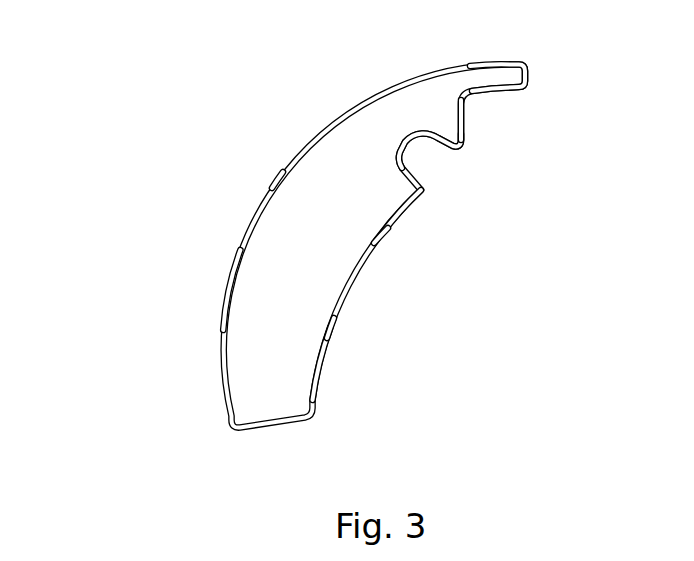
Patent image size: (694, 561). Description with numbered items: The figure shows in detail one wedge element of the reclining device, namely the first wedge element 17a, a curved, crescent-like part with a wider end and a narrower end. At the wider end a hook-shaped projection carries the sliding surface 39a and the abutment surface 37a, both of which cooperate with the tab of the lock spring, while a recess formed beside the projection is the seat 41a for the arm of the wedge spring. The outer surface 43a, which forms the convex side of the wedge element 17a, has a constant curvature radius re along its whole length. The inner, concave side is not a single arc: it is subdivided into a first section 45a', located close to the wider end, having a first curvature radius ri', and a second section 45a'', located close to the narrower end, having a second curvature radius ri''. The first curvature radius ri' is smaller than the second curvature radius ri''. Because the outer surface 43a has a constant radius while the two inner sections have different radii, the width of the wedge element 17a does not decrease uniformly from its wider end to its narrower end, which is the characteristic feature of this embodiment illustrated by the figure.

The first wedge element 17a is at (596, 99).
The seat 41a is at (417, 133).
The abutment surface 37a is at (466, 122).
The sliding surface 39a is at (498, 91).
The first section of the inner surface 45a' is at (470, 224).
The second section of the inner surface 45a'' is at (378, 388).
The outer surface 43a is at (226, 288).
The curvature radius of the outer surface re is at (253, 165).
The first curvature radius ri' is at (437, 272).
The second curvature radius ri'' is at (392, 362).